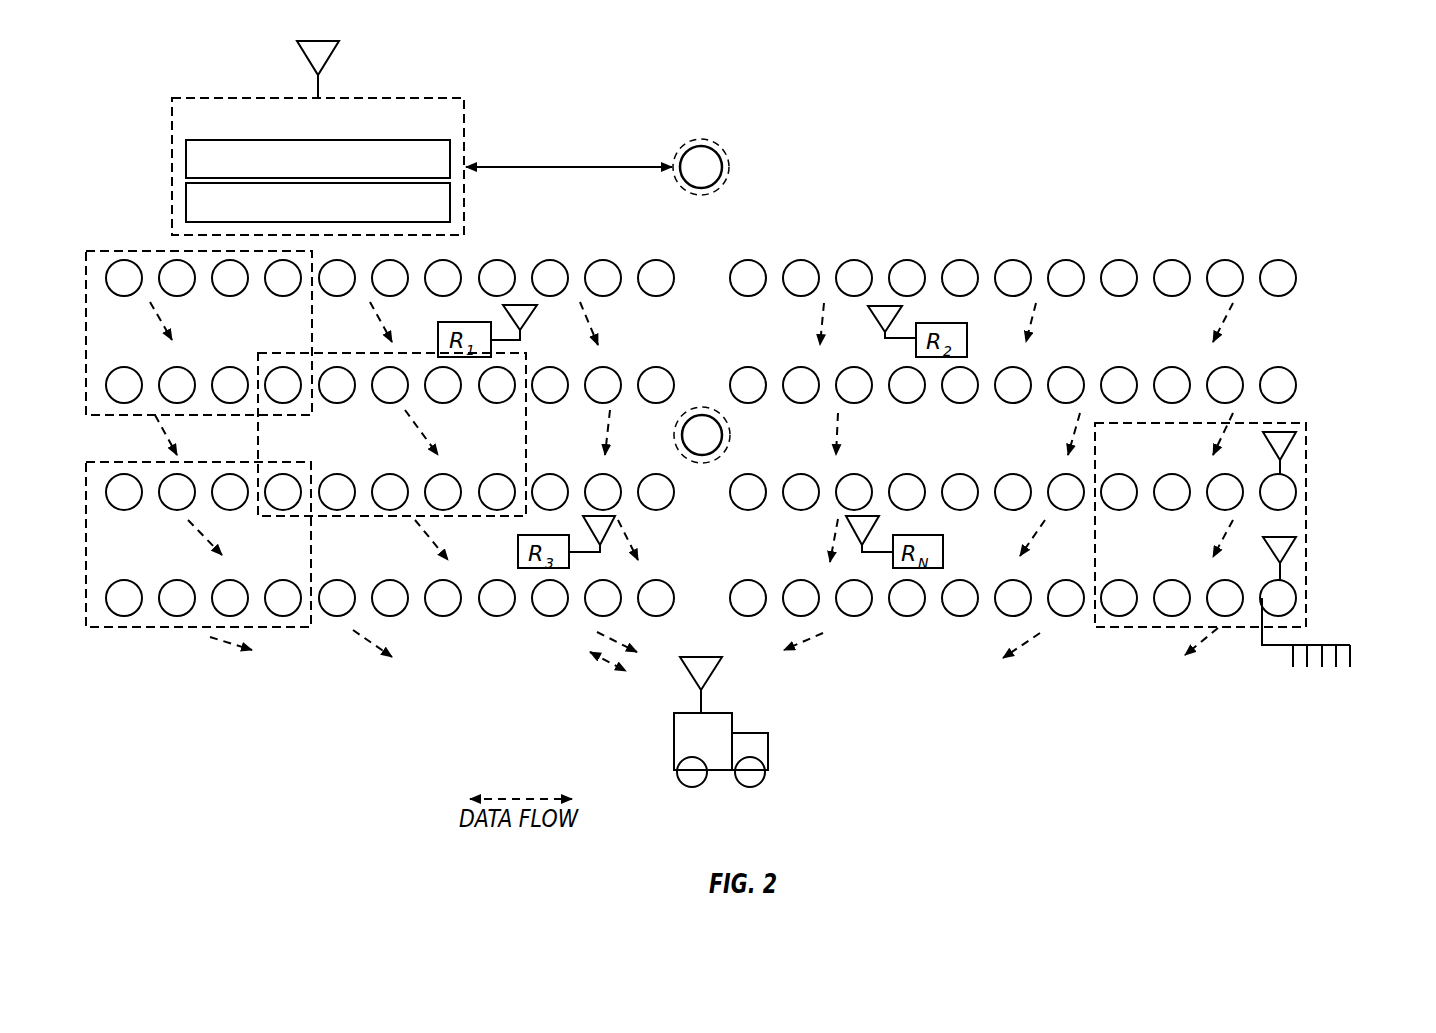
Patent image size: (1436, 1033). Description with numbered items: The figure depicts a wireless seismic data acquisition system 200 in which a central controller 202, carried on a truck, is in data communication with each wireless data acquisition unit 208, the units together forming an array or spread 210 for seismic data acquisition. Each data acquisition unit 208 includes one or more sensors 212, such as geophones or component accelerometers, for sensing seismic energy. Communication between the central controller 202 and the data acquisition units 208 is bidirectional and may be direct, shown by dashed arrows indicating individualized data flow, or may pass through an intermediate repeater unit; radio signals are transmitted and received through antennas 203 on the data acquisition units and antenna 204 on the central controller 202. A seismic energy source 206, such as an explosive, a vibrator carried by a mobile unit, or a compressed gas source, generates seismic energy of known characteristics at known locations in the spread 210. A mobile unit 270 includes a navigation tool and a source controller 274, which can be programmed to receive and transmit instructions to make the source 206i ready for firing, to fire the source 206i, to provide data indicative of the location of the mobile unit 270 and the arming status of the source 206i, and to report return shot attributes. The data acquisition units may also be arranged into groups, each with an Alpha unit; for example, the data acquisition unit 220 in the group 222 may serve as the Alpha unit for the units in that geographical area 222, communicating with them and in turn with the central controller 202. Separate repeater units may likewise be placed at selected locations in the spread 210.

The wireless seismic data acquisition system 200 is at (966, 695).
The central controller 202 is at (770, 748).
The antenna 203 is at (1290, 447).
The antenna 204 is at (331, 57).
The seismic energy source 206 is at (730, 427).
The source 206i is at (701, 139).
The wireless data acquisition unit 208 is at (1280, 297).
The array (spread) 210 is at (1163, 115).
The sensor 212 is at (1352, 655).
The data acquisition unit (Alpha unit) 220 is at (1296, 503).
The group (geographical area) 222 is at (1298, 417).
The mobile unit 270 is at (323, 166).
The source controller 274 is at (186, 203).